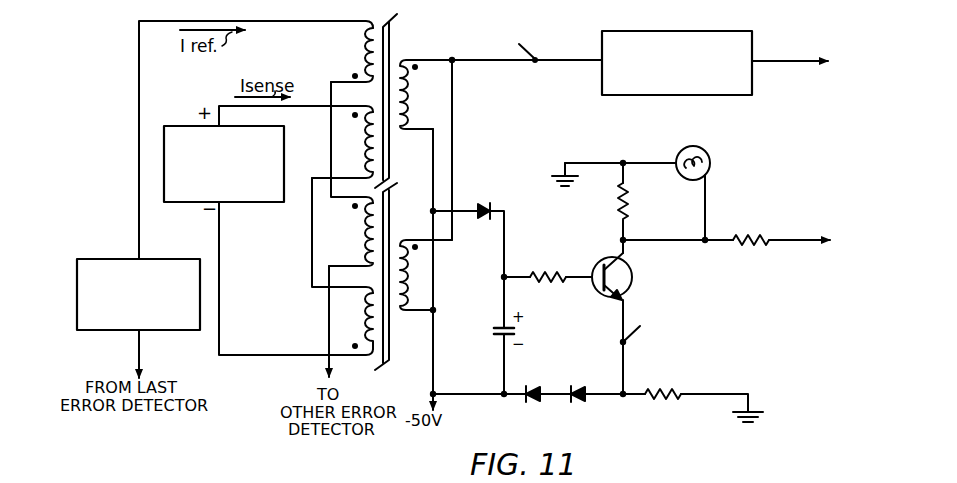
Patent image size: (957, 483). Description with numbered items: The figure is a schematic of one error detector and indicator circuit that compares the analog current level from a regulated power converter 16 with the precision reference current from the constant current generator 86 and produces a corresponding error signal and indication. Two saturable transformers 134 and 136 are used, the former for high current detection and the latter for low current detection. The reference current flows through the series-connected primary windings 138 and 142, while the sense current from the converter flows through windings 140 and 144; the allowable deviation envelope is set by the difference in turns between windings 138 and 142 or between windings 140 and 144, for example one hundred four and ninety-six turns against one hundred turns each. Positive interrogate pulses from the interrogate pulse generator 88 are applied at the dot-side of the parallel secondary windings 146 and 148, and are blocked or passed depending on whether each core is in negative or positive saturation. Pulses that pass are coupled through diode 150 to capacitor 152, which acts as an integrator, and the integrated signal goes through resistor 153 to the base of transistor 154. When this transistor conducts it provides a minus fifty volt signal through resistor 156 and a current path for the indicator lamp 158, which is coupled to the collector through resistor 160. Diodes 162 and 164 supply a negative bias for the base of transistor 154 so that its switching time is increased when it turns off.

The regulated power converter 16 is at (184, 196).
The constant current generator 86 is at (80, 285).
The interrogate pulse generator 88 is at (751, 47).
The saturable transformer 134 is at (396, 56).
The saturable transformer 136 is at (388, 366).
The primary winding 138 is at (360, 71).
The winding 140 is at (358, 154).
The primary winding 142 is at (362, 234).
The winding 144 is at (360, 323).
The winding 146 is at (414, 102).
The winding 148 is at (414, 282).
The diode 150 is at (486, 206).
The capacitor 152 is at (498, 328).
The resistor 153 is at (563, 268).
The transistor 154 is at (630, 284).
The resistor 156 is at (762, 232).
The indicator lamp 158 is at (710, 161).
The resistor 160 is at (614, 192).
The diode 162 is at (524, 400).
The diode 164 is at (580, 400).